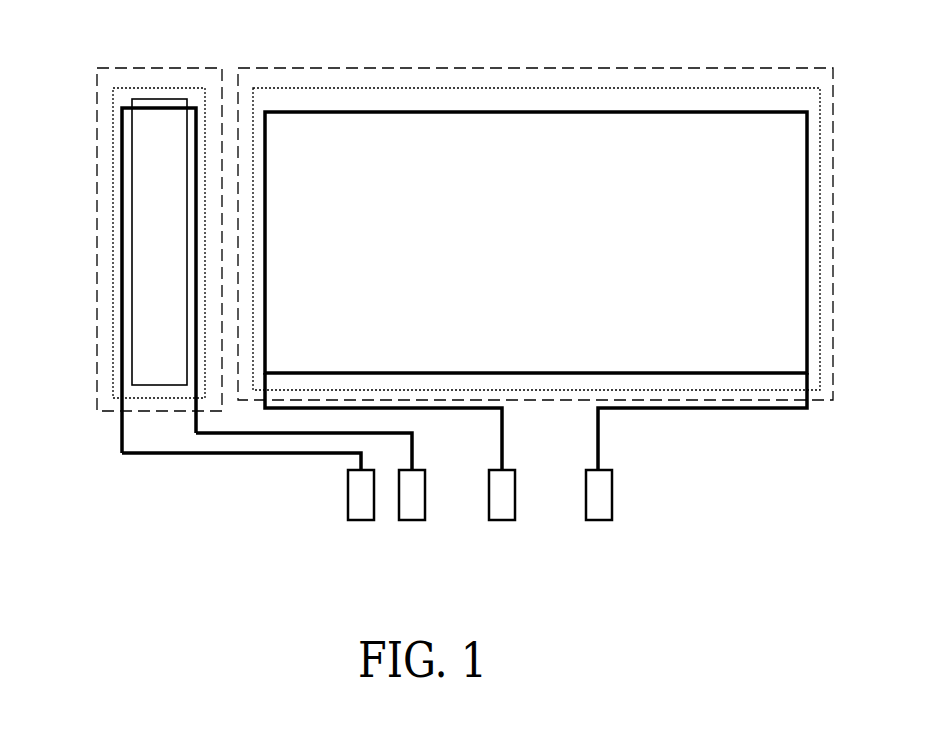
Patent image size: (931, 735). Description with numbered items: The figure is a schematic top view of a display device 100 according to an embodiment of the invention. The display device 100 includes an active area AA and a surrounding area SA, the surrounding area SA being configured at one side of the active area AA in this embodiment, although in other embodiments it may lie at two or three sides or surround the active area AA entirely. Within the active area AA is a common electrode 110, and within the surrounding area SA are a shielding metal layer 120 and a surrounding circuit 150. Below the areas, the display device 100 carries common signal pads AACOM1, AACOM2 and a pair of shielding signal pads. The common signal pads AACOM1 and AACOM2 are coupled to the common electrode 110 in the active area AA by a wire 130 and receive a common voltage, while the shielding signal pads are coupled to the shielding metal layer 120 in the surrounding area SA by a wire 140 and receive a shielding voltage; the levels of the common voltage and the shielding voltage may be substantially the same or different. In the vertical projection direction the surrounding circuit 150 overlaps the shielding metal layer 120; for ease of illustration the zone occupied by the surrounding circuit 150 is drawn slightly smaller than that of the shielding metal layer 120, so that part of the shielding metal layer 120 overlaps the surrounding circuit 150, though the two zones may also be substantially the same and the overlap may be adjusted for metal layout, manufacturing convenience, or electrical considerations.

The display device 100 is at (437, 318).
The common electrode 110 is at (532, 88).
The shielding metal layer 120 is at (192, 88).
The wire 130 is at (600, 437).
The wire 140 is at (182, 457).
The surrounding circuit 150 is at (133, 243).
The surrounding area SA is at (157, 66).
The active area AA is at (430, 66).
The common signal pad AACOM1 is at (497, 522).
The common signal pad AACOM2 is at (598, 522).